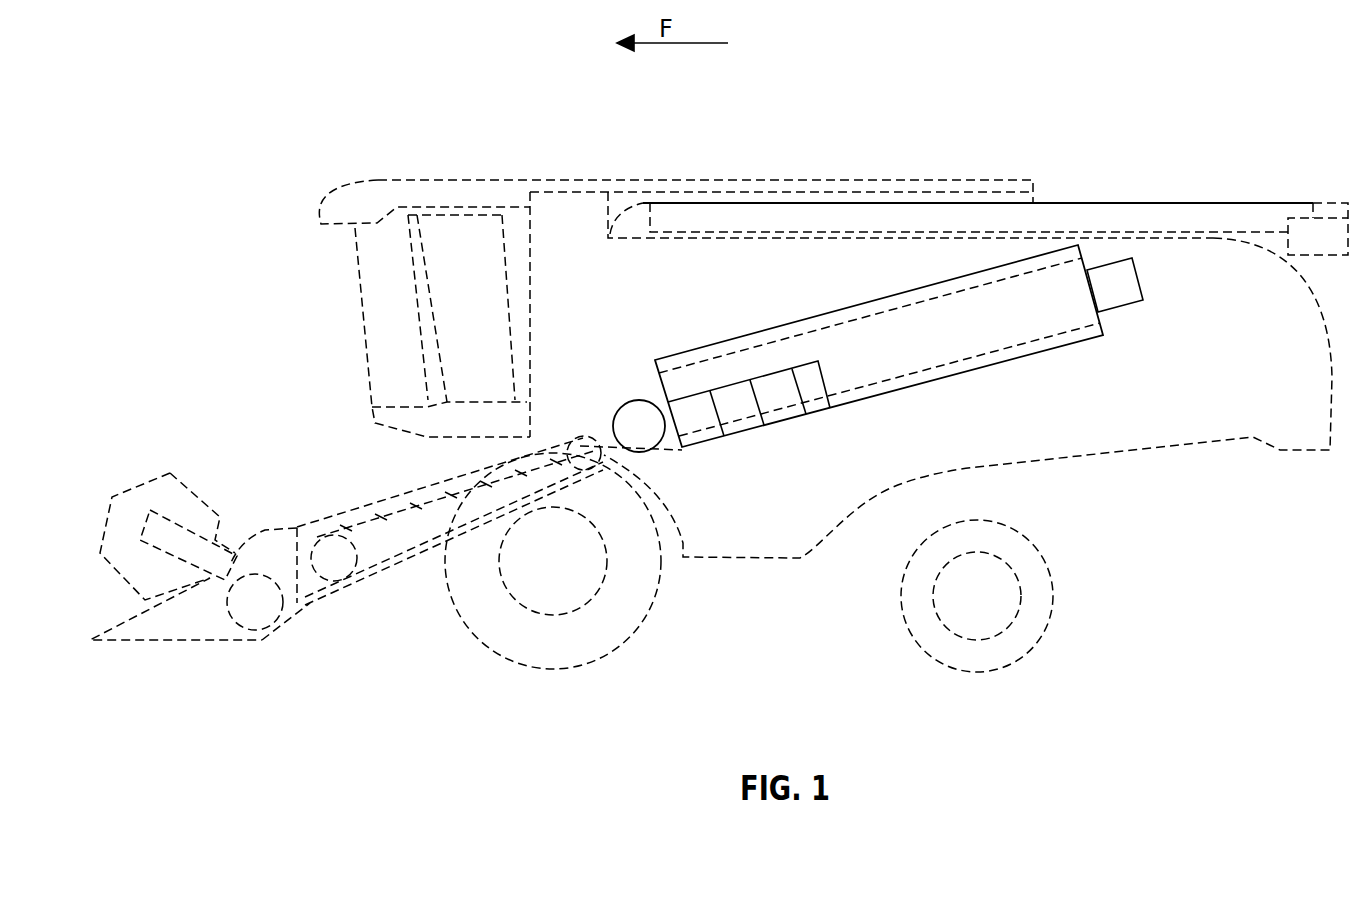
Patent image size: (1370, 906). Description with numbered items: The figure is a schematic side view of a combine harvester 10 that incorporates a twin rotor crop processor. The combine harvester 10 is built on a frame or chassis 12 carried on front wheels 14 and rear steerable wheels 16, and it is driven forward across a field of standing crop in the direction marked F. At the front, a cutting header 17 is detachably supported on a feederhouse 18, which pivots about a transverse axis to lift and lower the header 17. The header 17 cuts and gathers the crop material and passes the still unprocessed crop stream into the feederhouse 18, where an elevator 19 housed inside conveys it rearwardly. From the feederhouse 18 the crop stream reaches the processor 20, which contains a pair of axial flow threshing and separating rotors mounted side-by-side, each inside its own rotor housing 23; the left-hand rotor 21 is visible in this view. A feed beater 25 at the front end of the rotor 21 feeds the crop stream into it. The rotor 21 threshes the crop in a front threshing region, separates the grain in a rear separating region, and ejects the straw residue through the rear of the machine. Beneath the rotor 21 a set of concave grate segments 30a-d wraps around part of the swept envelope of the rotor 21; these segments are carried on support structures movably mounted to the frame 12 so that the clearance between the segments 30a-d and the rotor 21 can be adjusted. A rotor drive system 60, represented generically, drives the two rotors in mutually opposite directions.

The combine harvester 10 is at (1226, 113).
The frame or chassis 12 is at (763, 560).
The front wheels 14 is at (495, 652).
The rear steerable wheels 16 is at (1027, 653).
The cutting header 17 is at (142, 642).
The feederhouse 18 is at (372, 577).
The elevator 19 is at (353, 518).
The processor 20 is at (690, 348).
The axial flow threshing and separating rotor 21 is at (827, 327).
The rotor housing 23 is at (1040, 355).
The feed beater 25 is at (622, 408).
The concave grate segments 30a-d is at (813, 420).
The rotor drive system 60 is at (1123, 303).